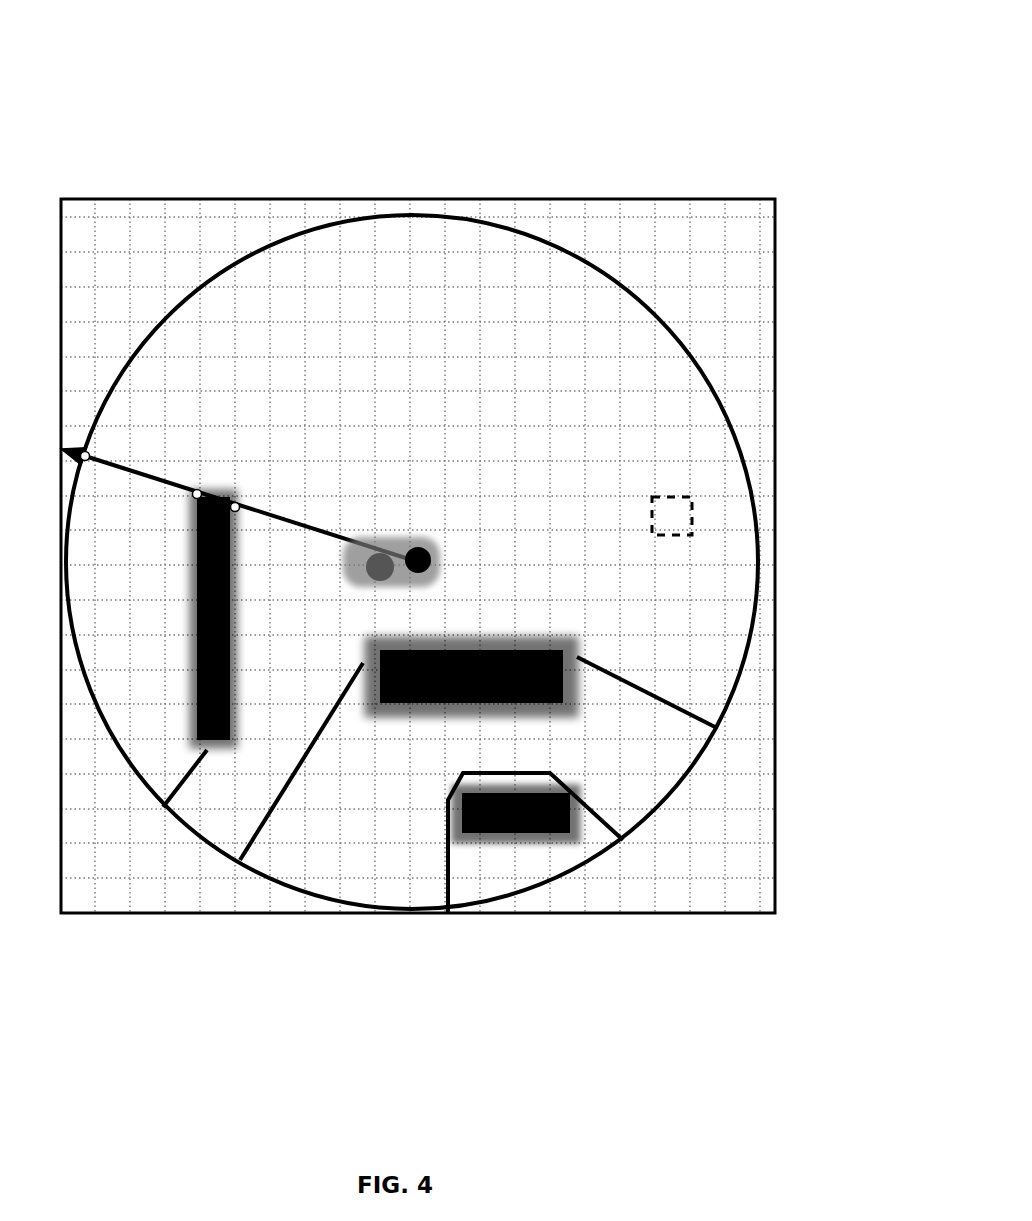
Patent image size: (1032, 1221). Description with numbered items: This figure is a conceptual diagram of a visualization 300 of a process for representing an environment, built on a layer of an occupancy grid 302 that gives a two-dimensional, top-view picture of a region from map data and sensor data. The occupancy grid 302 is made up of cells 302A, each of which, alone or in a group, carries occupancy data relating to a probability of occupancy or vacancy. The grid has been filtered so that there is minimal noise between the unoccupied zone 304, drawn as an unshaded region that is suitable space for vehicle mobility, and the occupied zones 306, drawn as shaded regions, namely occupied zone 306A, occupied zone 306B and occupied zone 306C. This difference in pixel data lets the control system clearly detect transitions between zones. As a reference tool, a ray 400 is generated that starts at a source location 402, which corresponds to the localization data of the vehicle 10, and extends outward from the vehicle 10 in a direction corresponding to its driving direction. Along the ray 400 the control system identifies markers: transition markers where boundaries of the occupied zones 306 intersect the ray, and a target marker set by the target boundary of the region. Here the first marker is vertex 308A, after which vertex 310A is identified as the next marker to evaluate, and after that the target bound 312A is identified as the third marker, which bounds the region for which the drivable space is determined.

The visualization 300 is at (479, 563).
The occupancy grid 302 is at (728, 310).
The cell 302A is at (692, 517).
The unoccupied zone 304 is at (447, 414).
The occupied zones 306 is at (440, 776).
The occupied zone 306A is at (230, 746).
The occupied zone 306B is at (433, 708).
The occupied zone 306C is at (518, 838).
The vertex 308A is at (236, 502).
The vertex 310A is at (196, 490).
The target bound 312A is at (86, 450).
The ray 400 is at (238, 414).
The vehicle 10 is at (445, 531).
The source location 402 is at (437, 570).